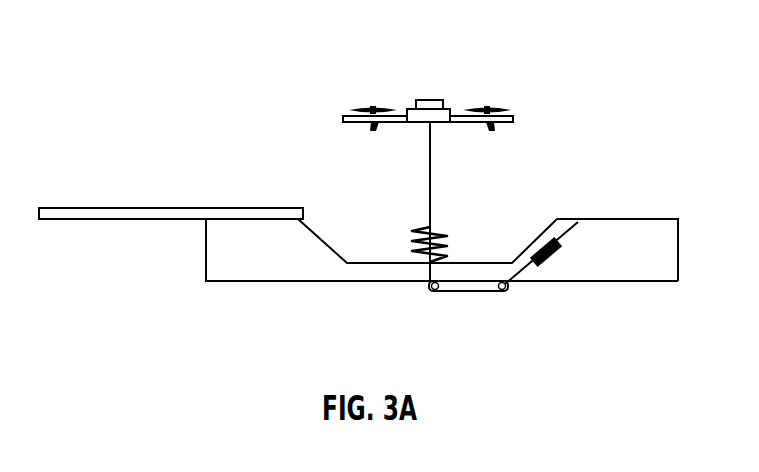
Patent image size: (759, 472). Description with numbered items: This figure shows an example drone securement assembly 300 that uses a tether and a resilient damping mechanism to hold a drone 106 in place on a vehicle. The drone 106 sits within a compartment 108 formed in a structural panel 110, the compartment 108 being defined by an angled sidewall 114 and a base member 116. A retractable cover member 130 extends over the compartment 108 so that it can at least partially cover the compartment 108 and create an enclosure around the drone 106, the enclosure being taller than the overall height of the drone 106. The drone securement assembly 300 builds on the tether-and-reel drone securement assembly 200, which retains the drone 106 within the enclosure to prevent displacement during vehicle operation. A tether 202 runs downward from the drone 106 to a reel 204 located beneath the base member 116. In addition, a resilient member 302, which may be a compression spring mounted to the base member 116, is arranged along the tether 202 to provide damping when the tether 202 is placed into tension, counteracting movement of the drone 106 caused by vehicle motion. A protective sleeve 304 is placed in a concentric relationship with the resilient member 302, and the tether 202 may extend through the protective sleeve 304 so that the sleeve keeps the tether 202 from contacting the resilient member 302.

The drone securement assembly 300 is at (160, 53).
The drone 106 is at (430, 98).
The retractable cover member 130 is at (172, 207).
The angled sidewall 114 is at (320, 238).
The base member 116 is at (385, 275).
The structural panel 110 is at (652, 253).
The resilient member 302 is at (445, 256).
The protective sleeve 304 is at (438, 235).
The compartment 108 is at (522, 215).
The reel 204 is at (578, 222).
The tether 202 is at (468, 293).
The drone securement assembly 200 is at (537, 303).